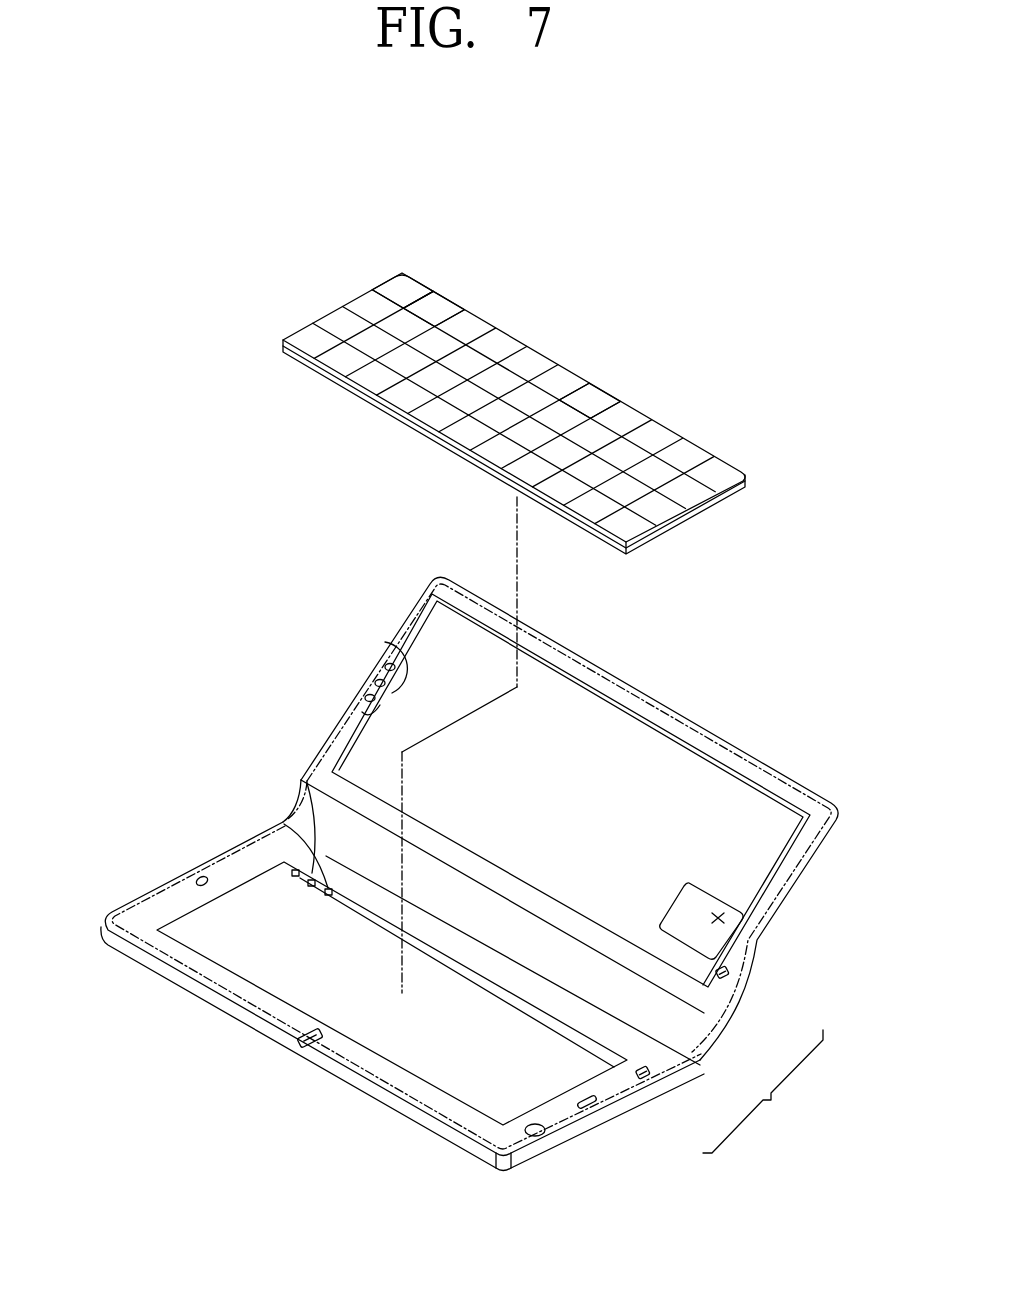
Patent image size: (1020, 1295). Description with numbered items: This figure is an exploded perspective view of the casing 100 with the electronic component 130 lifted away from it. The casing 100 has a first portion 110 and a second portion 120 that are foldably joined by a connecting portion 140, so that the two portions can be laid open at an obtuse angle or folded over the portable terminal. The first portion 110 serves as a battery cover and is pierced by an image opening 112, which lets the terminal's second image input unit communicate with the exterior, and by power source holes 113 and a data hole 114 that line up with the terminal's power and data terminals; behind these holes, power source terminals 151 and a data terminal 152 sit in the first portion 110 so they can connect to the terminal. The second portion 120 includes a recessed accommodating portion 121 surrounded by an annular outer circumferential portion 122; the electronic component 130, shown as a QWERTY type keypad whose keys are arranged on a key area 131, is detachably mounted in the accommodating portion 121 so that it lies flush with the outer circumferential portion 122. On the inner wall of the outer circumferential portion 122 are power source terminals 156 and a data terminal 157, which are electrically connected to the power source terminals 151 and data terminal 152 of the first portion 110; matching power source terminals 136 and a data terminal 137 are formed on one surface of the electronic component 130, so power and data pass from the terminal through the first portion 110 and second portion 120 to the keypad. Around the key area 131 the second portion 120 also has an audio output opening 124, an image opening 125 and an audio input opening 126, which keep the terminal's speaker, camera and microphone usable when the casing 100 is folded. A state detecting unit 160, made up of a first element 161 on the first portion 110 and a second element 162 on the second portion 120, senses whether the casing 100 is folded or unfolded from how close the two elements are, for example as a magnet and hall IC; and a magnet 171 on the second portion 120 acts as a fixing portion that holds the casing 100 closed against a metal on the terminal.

The casing 100 is at (138, 760).
The first portion 110 is at (822, 893).
The image opening 112 is at (722, 918).
The power source holes 113 is at (396, 672).
The data hole 114 is at (372, 706).
The second portion 120 is at (546, 1180).
The accommodating portion 121 is at (407, 1037).
The outer circumferential portion 122 is at (135, 908).
The audio output opening 124 is at (590, 1106).
The image opening 125 is at (542, 1135).
The audio input opening 126 is at (198, 878).
The electronic component 130 is at (606, 354).
The key area 131 is at (615, 402).
The power source terminals 136 is at (455, 300).
The data terminal 137 is at (417, 282).
The connecting portion 140 is at (314, 803).
The power source terminals 151 is at (380, 683).
The data terminal 152 is at (370, 698).
The power source terminals 156 is at (323, 872).
The data terminal 157 is at (295, 872).
The state detecting unit 160 is at (763, 1091).
The first element 161 is at (730, 980).
The second element 162 is at (652, 1080).
The magnet 171 is at (298, 1047).